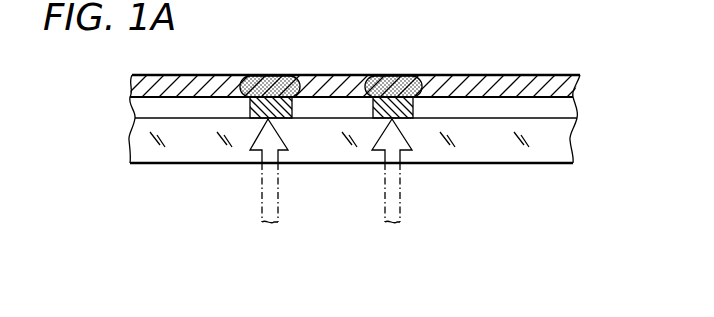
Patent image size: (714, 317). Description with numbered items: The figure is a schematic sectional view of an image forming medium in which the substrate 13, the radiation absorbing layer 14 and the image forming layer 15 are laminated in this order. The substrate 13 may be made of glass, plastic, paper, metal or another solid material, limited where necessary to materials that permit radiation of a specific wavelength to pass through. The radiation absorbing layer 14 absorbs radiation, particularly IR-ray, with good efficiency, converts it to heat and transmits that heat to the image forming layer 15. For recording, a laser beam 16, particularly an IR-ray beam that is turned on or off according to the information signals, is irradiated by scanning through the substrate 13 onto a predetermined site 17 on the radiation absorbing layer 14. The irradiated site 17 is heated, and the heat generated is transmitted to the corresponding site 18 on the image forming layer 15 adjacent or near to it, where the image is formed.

The substrate 13 is at (562, 142).
The radiation absorbing layer 14 is at (558, 107).
The image forming layer 15 is at (536, 82).
The laser beam 16 is at (395, 205).
The irradiated site 17 is at (292, 103).
The corresponding site 18 is at (274, 75).